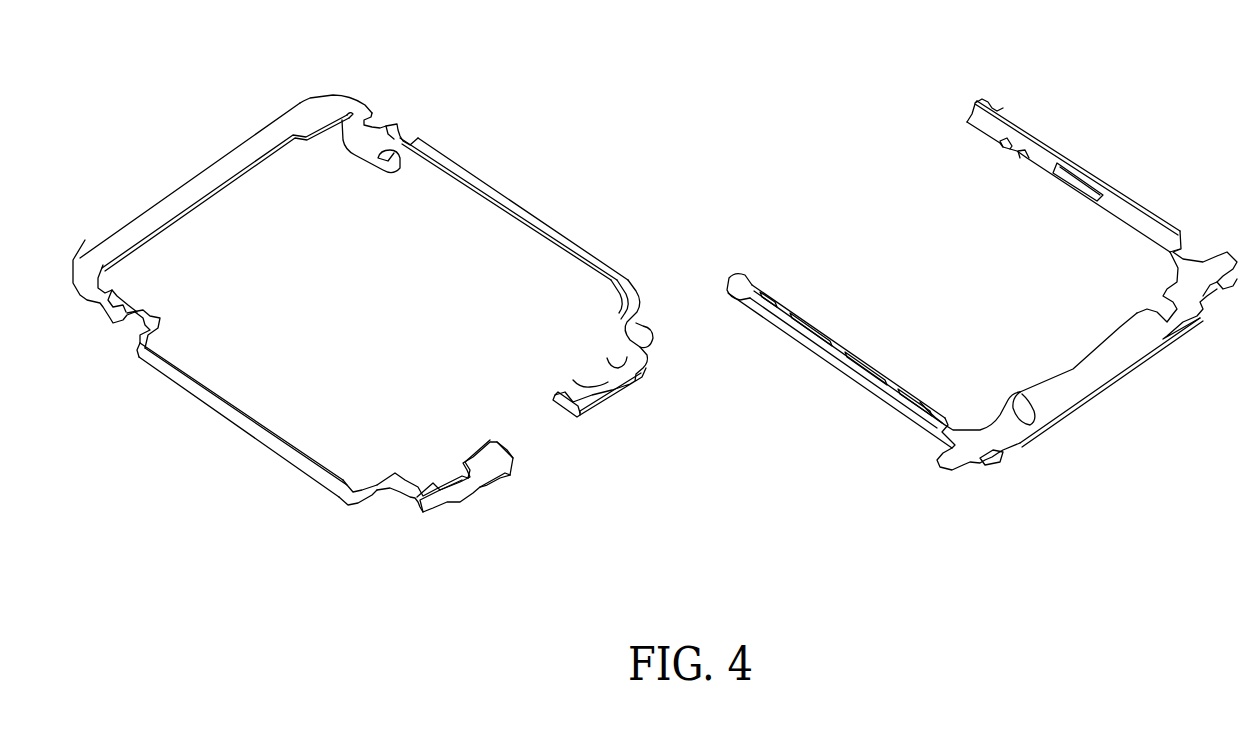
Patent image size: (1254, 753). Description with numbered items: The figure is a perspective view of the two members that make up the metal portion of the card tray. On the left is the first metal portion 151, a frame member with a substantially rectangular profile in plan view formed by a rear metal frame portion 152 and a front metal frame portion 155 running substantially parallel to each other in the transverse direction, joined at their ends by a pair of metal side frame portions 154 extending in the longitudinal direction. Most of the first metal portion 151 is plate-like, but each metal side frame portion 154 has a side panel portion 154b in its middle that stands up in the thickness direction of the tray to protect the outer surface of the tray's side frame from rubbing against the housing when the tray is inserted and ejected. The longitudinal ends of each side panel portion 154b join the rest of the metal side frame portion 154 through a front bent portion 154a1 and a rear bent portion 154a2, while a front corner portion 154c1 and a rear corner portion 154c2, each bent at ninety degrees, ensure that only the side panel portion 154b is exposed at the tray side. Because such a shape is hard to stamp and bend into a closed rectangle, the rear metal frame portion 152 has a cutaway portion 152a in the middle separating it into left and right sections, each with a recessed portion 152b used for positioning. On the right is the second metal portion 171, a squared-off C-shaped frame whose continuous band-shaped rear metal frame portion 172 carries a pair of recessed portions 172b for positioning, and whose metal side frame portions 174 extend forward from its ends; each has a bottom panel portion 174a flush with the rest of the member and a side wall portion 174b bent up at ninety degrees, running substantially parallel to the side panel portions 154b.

The first metal portion 151 is at (341, 92).
The rear metal frame portion 152 is at (595, 415).
The cutaway portion 152a is at (535, 432).
The recessed portion 152b is at (455, 478).
The metal side frame portion 154 is at (403, 117).
The front bent portion 154a1 is at (365, 172).
The rear bent portion 154a2 is at (652, 340).
The side panel portion 154b is at (530, 210).
The front corner portion 154c1 is at (128, 350).
The rear corner portion 154c2 is at (360, 507).
The front metal frame portion 155 is at (228, 155).
The second metal portion 171 is at (963, 470).
The rear metal frame portion 172 is at (1070, 402).
The recessed portion 172b is at (1005, 414).
The metal side frame portion 174 is at (866, 412).
The bottom panel portion 174a is at (1100, 222).
The side wall portion 174b is at (1106, 188).